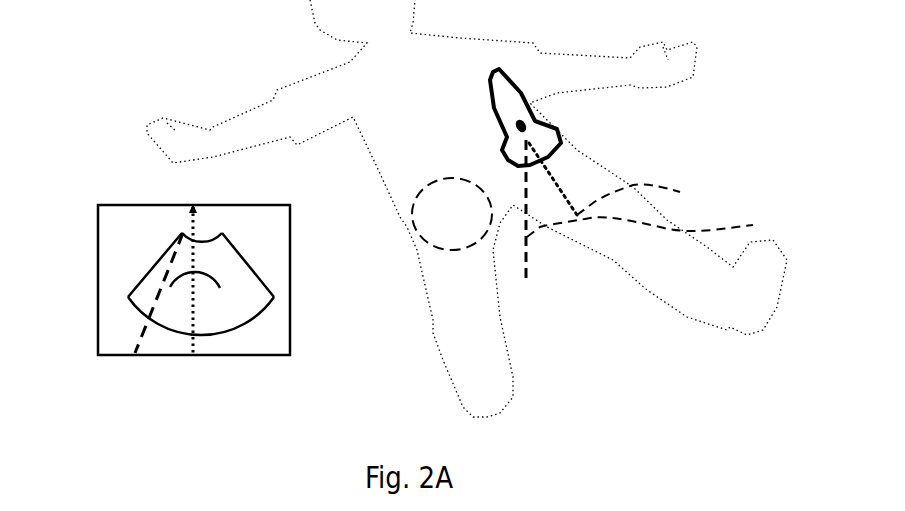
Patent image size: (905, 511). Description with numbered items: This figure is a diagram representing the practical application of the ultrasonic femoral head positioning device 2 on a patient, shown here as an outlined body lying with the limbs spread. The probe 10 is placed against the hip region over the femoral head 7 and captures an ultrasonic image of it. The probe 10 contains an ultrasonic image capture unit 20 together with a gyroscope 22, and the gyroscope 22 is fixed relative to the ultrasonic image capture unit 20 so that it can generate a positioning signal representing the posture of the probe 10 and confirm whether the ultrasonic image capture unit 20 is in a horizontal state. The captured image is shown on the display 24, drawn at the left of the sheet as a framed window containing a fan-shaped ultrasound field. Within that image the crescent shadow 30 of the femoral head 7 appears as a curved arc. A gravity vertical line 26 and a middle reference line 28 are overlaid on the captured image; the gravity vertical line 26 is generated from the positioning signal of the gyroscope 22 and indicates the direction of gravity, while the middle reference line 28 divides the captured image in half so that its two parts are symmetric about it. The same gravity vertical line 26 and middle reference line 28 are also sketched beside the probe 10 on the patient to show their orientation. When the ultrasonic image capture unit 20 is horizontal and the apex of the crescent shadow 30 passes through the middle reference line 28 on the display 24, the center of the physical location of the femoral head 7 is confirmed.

The ultrasonic femoral head positioning device 2 is at (190, 77).
The femoral head 7 is at (413, 200).
The probe 10 is at (578, 141).
The ultrasonic image capture unit 20 is at (578, 176).
The gyroscope 22 is at (527, 127).
The display 24 is at (98, 240).
The gravity vertical line 26 is at (143, 325).
The middle reference line 28 is at (200, 347).
The crescent shadow 30 is at (218, 280).